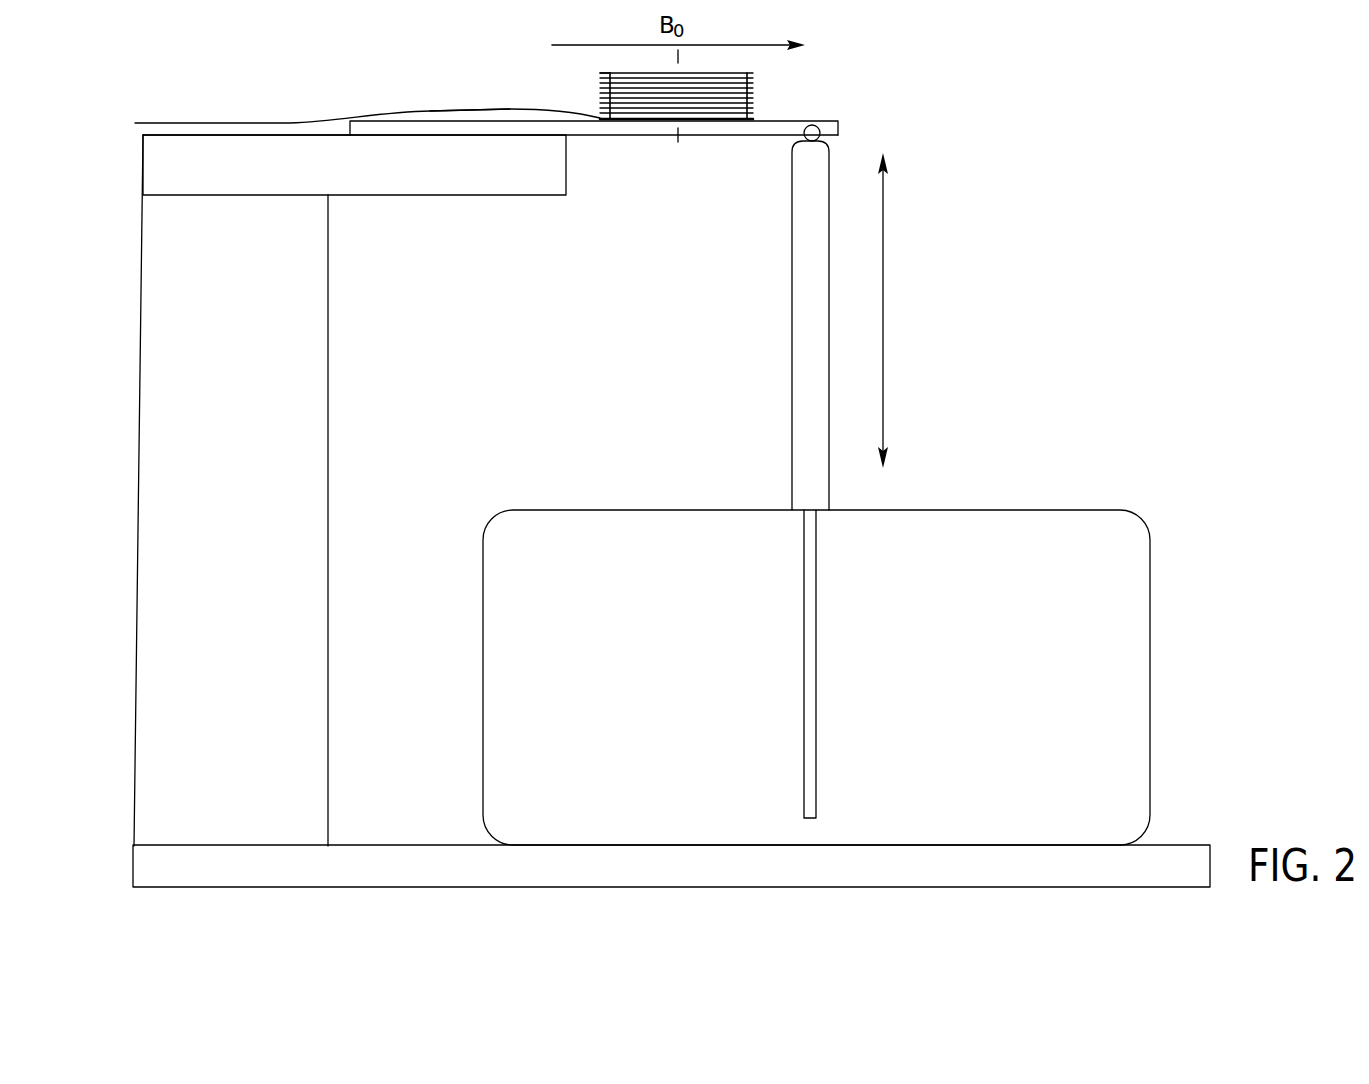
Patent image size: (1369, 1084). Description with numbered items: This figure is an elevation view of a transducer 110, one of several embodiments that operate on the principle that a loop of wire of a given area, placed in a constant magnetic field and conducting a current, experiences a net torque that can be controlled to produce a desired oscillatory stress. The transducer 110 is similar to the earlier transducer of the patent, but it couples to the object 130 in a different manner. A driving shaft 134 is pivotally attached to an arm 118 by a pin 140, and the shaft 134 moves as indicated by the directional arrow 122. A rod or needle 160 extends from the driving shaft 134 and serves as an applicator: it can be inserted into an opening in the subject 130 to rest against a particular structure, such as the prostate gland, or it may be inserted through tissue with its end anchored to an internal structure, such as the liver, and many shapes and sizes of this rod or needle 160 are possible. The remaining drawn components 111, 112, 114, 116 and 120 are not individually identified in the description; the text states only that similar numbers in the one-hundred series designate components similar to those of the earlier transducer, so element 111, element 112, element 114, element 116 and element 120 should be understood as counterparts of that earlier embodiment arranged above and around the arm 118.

The transducer 110 is at (497, 101).
The coil winding 111 is at (605, 93).
The RF coil 112 is at (755, 73).
The coil axis 114 is at (682, 150).
The surface 116 is at (284, 122).
The arm 118 is at (587, 130).
The support structure 120 is at (232, 175).
The directional arrow 122 is at (883, 385).
The object 130 is at (1152, 608).
The driving shaft 134 is at (792, 332).
The pin 140 is at (838, 127).
The rod or needle 160 is at (817, 585).